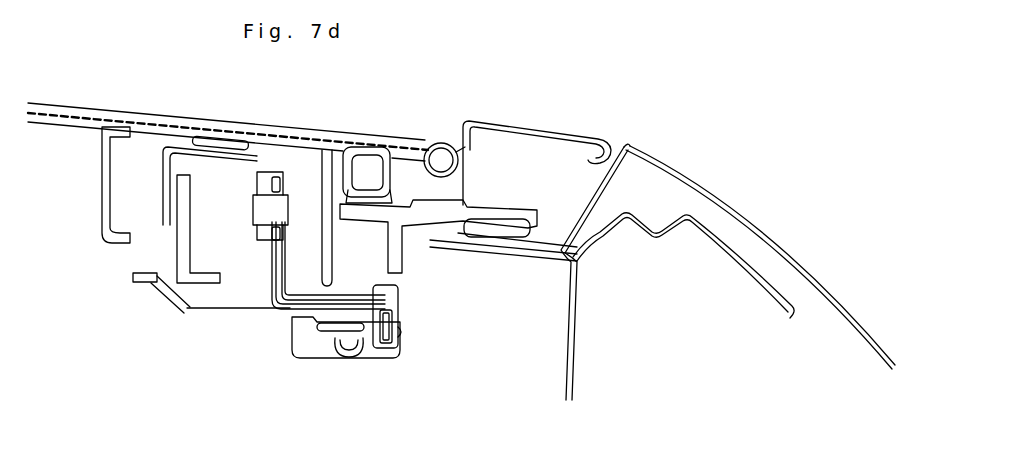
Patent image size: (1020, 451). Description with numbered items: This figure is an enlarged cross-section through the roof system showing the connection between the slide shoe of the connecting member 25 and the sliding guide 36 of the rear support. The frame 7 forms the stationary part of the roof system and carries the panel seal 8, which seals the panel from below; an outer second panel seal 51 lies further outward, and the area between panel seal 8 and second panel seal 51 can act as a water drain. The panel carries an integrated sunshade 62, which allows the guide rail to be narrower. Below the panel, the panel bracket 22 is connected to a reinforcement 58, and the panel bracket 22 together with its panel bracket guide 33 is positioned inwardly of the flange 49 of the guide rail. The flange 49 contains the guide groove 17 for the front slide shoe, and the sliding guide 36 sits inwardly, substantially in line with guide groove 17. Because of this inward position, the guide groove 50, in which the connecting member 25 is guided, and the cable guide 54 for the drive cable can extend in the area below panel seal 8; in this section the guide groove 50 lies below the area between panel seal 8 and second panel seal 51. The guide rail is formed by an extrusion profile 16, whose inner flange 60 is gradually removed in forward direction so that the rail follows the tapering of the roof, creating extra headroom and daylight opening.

The sunshade 62 is at (68, 108).
The reinforcement 58 is at (180, 147).
The sliding guide 36 is at (263, 170).
The panel seal 8 is at (383, 158).
The second panel seal 51 is at (437, 143).
The frame 7 is at (493, 215).
The panel bracket 22 is at (182, 232).
The inner flange 60 is at (147, 277).
The panel bracket guide 33 is at (200, 277).
The flange 49 is at (240, 258).
The guide groove 17 is at (250, 235).
The extrusion profile 16 is at (290, 337).
The cable guide 54 is at (352, 337).
The connecting member 25 is at (387, 337).
The guide groove 50 is at (383, 308).